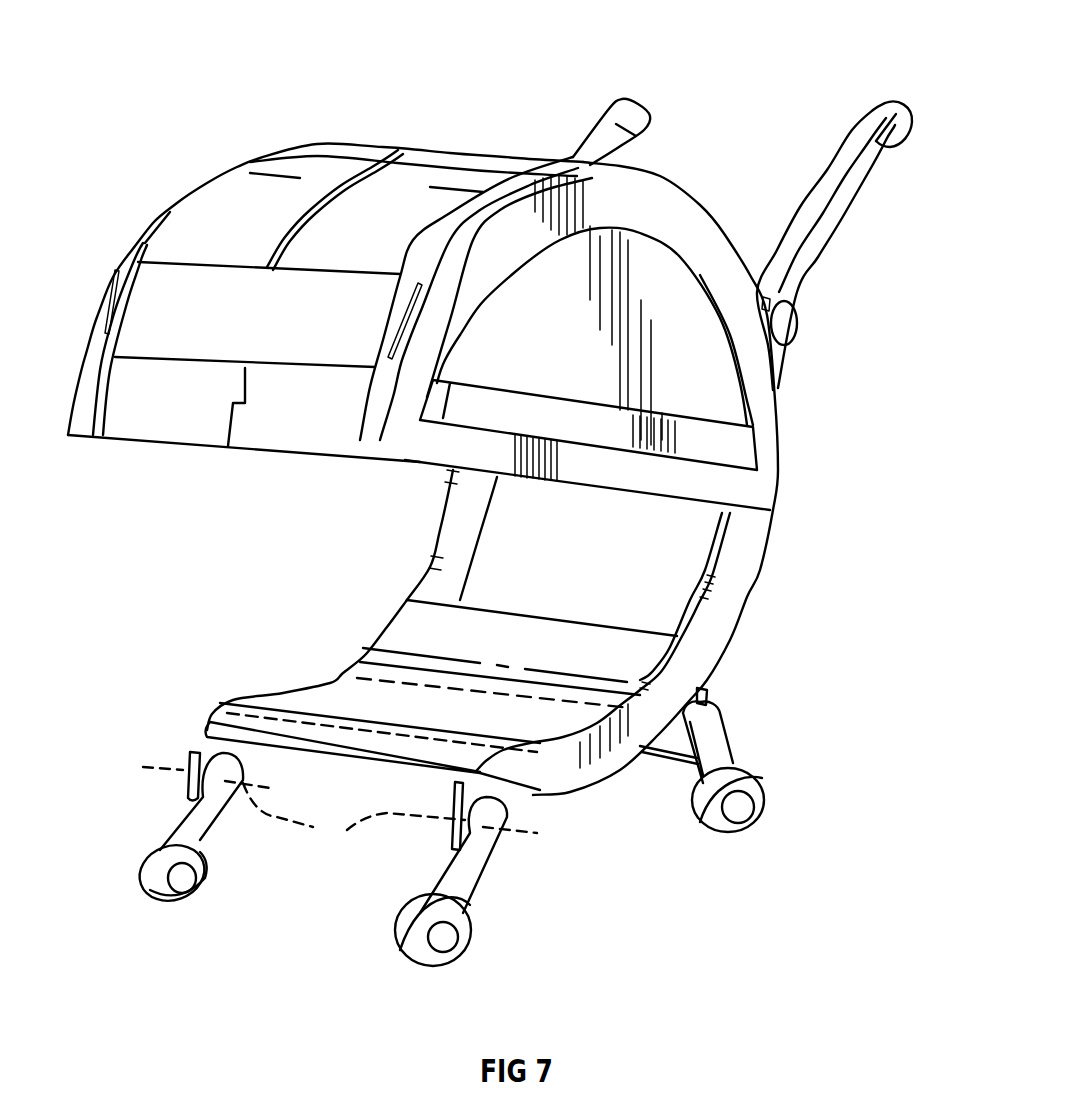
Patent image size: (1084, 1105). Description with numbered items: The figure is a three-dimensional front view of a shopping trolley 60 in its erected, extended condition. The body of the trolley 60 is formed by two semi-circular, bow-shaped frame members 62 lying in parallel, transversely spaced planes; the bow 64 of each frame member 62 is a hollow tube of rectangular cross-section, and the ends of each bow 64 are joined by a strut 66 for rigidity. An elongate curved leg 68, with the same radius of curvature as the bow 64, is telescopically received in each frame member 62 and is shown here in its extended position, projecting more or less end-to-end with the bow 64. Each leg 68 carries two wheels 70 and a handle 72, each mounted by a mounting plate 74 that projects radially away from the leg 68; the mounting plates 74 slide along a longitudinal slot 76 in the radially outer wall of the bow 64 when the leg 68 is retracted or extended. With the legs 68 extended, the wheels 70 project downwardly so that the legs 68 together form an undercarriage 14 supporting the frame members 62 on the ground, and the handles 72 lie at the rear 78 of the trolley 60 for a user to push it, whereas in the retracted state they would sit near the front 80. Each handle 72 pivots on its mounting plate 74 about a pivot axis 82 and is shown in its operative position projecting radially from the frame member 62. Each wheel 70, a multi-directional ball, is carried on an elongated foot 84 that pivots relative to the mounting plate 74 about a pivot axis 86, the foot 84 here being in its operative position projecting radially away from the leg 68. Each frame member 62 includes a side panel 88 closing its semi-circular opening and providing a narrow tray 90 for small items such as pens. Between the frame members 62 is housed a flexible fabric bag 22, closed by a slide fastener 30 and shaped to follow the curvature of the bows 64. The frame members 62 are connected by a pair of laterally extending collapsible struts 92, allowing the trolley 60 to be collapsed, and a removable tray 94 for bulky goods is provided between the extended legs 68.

The undercarriage 14 is at (583, 803).
The flexible fabric bag 22 is at (228, 200).
The slide fastener 30 is at (398, 148).
The shopping trolley 60 is at (717, 80).
The frame member 62 is at (673, 207).
The bow 64 is at (580, 414).
The strut 66 is at (447, 440).
The leg 68 is at (723, 600).
The wheel 70 is at (183, 887).
The handle 72 is at (610, 115).
The mounting plate 74 is at (215, 750).
The slot 76 is at (110, 298).
The rear 78 is at (853, 403).
The front 80 is at (157, 460).
The pivot axis 82 is at (787, 323).
The foot 84 is at (193, 827).
The pivot axis 86 is at (340, 807).
The side panel 88 is at (577, 353).
The tray 90 is at (597, 427).
The collapsible strut 92 is at (287, 427).
The tray 94 is at (363, 690).